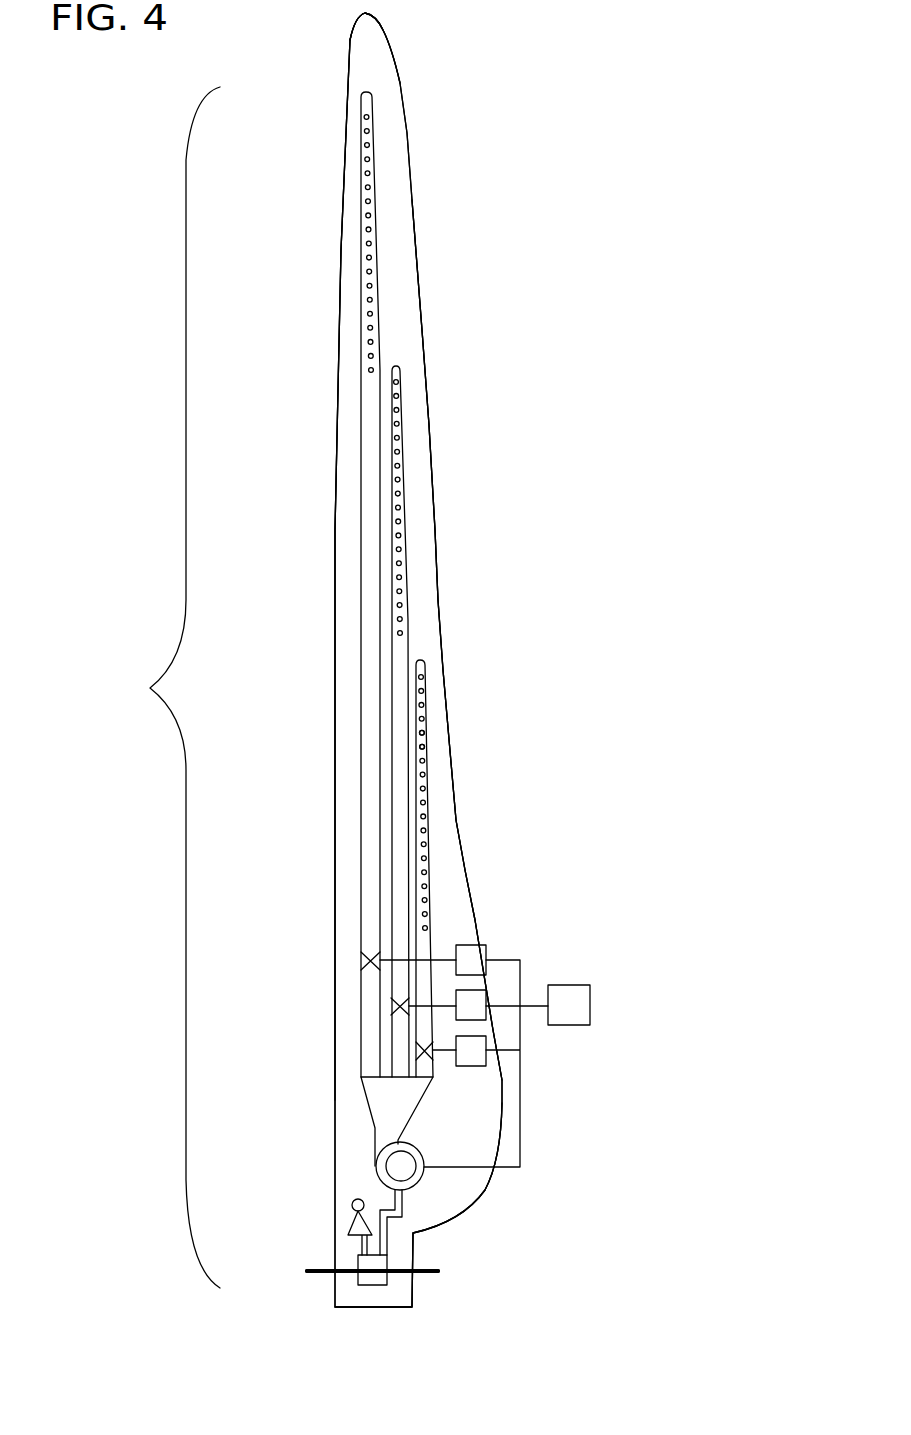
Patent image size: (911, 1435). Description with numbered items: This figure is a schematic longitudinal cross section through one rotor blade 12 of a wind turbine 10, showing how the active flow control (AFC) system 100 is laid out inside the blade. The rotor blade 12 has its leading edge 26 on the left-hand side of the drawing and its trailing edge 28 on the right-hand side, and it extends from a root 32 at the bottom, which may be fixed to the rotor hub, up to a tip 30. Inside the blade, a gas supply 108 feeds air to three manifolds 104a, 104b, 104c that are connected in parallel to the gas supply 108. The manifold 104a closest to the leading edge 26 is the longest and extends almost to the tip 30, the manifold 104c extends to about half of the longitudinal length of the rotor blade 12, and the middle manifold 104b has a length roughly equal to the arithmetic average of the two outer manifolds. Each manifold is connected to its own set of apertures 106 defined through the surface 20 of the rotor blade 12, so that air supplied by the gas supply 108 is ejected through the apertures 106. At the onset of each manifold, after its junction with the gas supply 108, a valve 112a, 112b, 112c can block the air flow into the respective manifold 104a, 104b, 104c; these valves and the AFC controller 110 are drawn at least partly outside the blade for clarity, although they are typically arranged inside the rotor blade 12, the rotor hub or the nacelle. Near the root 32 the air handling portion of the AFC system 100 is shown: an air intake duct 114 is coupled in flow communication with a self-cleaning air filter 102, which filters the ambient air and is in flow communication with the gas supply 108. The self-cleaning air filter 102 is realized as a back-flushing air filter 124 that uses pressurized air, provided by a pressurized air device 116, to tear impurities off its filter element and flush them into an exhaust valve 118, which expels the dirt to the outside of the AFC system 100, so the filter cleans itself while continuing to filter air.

The wind turbine 10 is at (688, 118).
The rotor blade 12 is at (553, 416).
The surface 20 is at (375, 67).
The leading edge 26 is at (335, 615).
The trailing edge 28 is at (436, 583).
The tip 30 is at (363, 14).
The root 32 is at (414, 1252).
The AFC system 100 is at (161, 687).
The self-cleaning air filter 102 is at (372, 1288).
The manifold 104a is at (361, 510).
The middle manifold 104b is at (392, 759).
The manifold 104c is at (431, 810).
The aperture 106 is at (426, 734).
The gas supply 108 is at (376, 1132).
The AFC controller 110 is at (590, 1003).
The valve 112a is at (487, 946).
The valve 112b is at (488, 998).
The valve 112c is at (489, 1062).
The air intake duct 114 is at (318, 1267).
The pressurized air device 116 is at (352, 1204).
The exhaust valve 118 is at (428, 1274).
The back-flushing air filter 124 is at (357, 1278).